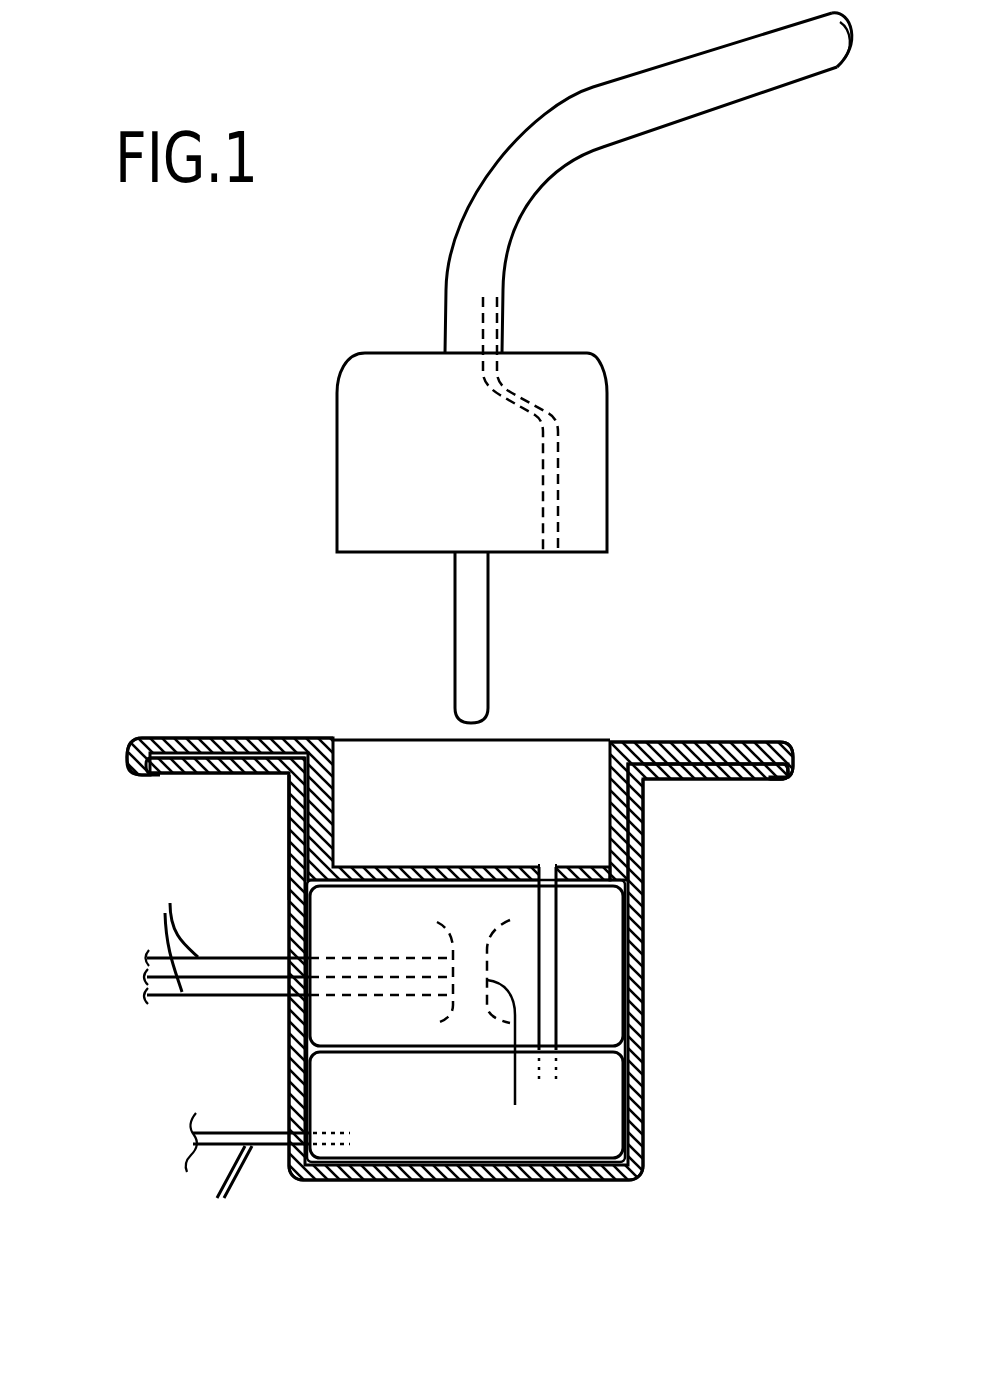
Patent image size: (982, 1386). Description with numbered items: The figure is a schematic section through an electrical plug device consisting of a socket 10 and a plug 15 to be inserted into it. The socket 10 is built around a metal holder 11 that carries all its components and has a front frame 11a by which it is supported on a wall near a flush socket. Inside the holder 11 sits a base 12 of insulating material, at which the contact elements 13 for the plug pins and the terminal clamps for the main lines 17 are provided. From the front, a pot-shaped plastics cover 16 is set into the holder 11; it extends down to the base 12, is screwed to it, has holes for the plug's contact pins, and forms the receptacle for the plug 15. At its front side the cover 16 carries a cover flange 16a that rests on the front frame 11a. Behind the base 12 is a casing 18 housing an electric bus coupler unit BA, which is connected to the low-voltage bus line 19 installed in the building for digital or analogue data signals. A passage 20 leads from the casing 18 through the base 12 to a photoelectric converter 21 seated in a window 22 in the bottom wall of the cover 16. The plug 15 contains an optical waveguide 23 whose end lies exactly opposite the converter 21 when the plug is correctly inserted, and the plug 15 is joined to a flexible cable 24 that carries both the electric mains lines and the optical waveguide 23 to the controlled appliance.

The socket 10 is at (135, 803).
The holder 11 is at (640, 870).
The front frame 11a is at (747, 780).
The base 12 is at (325, 1015).
The contact elements 13 is at (514, 1118).
The plug 15 is at (590, 432).
The cover 16 is at (333, 813).
The cover flange 16a is at (747, 742).
The main lines 17 is at (316, 954).
The casing 18 is at (372, 1140).
The bus line 19 is at (265, 1175).
The passage 20 is at (552, 977).
The photoelectric converter 21 is at (550, 873).
The window 22 is at (537, 865).
The optical waveguide 23 is at (537, 417).
The flexible cable 24 is at (768, 67).
The bus coupler unit BA is at (447, 1160).